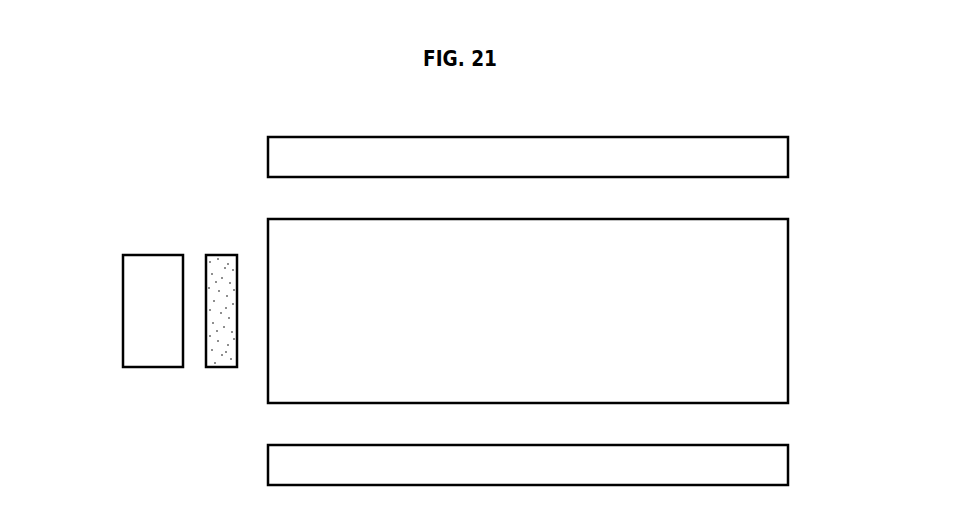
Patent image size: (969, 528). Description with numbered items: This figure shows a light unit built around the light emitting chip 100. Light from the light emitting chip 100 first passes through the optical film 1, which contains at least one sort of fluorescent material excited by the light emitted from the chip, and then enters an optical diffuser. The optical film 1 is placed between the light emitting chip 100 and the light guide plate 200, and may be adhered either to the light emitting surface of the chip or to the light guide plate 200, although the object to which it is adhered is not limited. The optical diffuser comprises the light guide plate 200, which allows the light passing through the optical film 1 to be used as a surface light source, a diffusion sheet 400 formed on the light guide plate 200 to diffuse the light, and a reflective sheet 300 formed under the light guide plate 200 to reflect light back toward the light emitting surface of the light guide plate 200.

The light emitting chip 100 is at (123, 295).
The optical film 1 is at (220, 367).
The light guide plate 200 is at (782, 325).
The reflective sheet 300 is at (782, 467).
The diffusion sheet 400 is at (782, 160).